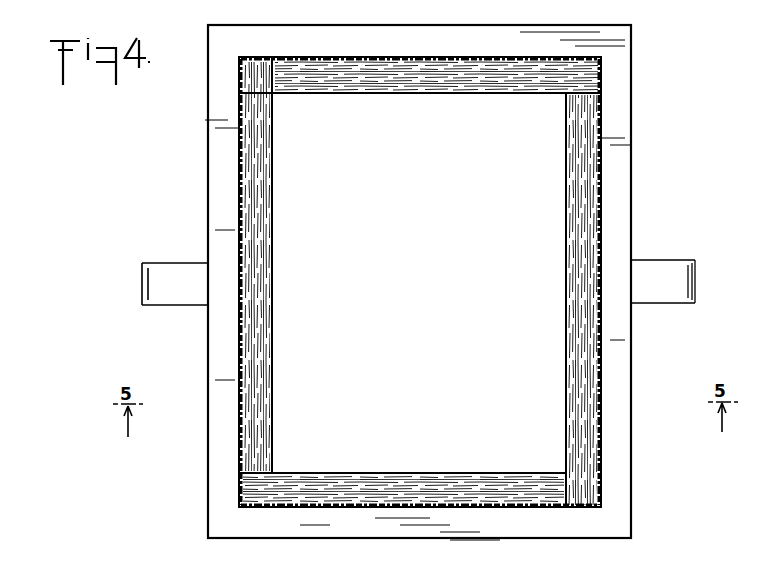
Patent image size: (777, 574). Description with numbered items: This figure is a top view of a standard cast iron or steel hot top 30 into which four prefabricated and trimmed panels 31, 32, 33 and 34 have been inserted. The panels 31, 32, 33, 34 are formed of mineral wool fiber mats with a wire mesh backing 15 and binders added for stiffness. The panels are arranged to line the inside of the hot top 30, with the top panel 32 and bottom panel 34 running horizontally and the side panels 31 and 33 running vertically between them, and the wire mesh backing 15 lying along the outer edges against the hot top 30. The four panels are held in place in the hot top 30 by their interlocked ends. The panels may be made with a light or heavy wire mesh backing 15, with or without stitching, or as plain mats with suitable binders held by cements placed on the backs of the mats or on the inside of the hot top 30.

The wire mesh backing 15 is at (485, 57).
The hot top 30 is at (620, 366).
The panel 31 is at (578, 277).
The panel 32 is at (455, 80).
The panel 33 is at (265, 300).
The panel 34 is at (413, 478).